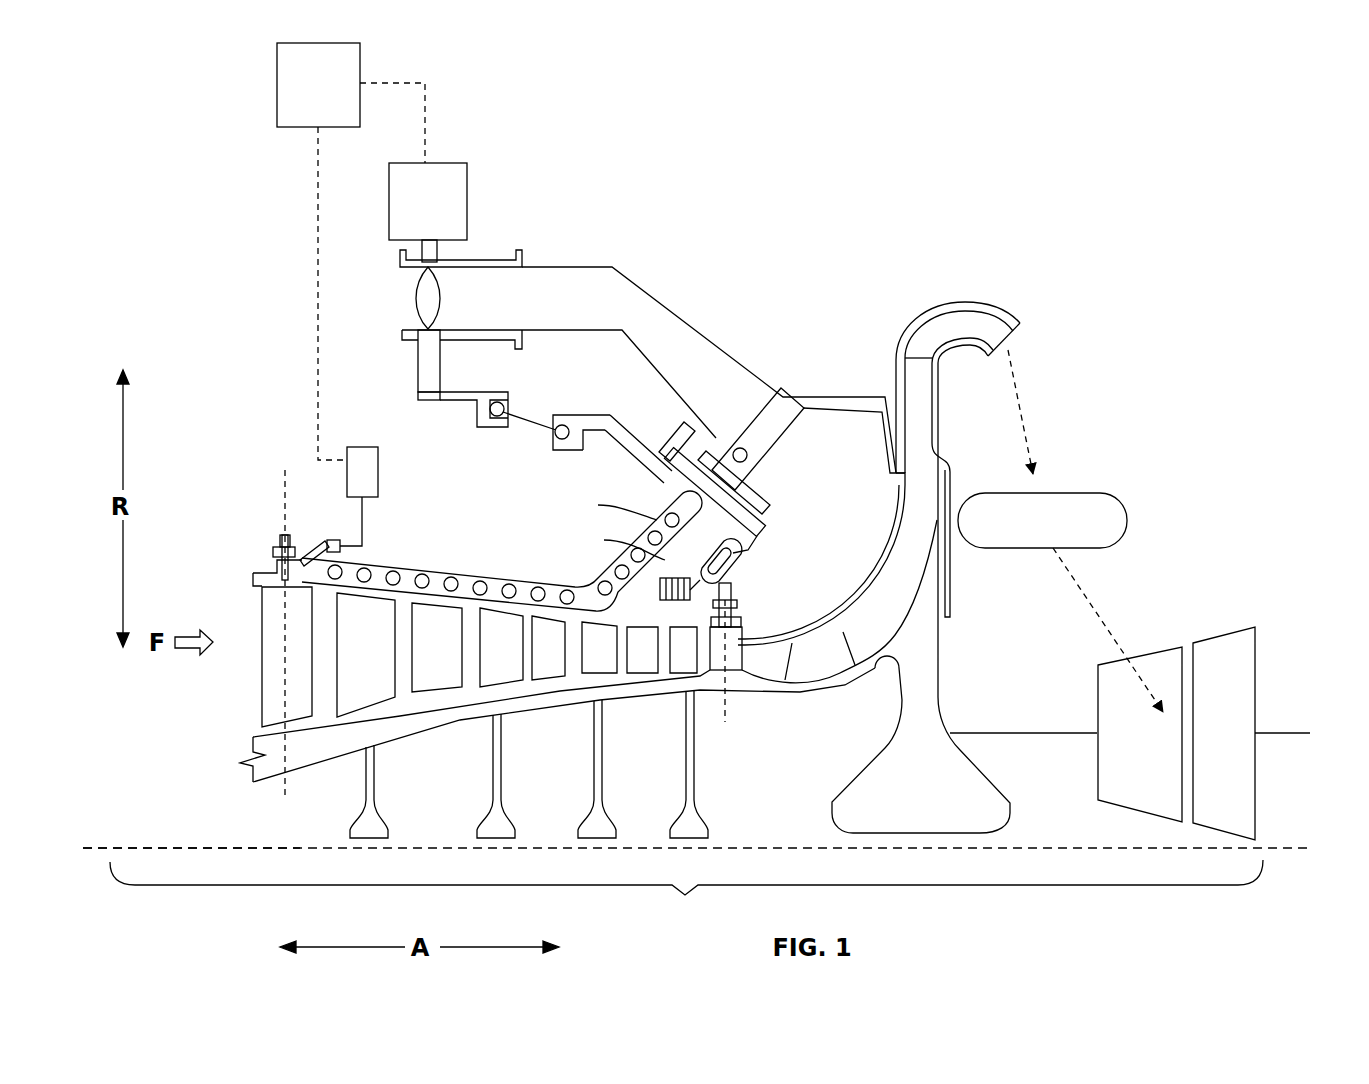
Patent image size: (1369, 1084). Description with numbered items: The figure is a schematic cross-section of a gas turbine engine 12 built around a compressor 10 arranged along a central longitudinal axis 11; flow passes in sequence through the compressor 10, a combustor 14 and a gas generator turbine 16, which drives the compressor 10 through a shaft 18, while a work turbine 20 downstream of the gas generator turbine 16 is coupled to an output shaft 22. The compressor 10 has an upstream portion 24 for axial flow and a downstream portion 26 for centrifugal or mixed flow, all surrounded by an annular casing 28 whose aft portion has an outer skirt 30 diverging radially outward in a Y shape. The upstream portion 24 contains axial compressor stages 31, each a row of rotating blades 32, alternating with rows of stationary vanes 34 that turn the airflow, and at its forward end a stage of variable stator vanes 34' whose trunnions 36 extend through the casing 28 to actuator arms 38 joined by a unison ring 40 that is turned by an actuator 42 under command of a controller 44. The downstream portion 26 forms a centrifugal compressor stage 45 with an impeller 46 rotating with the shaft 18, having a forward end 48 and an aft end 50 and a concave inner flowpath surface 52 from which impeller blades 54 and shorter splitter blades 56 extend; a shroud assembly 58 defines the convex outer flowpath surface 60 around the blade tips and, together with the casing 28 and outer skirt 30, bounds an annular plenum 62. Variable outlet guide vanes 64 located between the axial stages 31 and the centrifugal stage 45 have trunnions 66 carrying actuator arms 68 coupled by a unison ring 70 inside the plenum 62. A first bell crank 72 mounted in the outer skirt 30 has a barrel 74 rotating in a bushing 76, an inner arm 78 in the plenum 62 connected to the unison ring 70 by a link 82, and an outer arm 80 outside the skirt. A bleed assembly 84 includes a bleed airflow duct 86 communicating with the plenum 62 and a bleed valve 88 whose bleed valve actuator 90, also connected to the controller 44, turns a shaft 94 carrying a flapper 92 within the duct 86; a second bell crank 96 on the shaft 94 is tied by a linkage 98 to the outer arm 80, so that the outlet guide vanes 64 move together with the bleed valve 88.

The compressor 10 is at (300, 803).
The central longitudinal axis 11 is at (180, 848).
The gas turbine engine 12 is at (983, 207).
The combustor 14 is at (1026, 537).
The gas generator turbine 16 is at (1126, 751).
The shaft 18 is at (1026, 733).
The work turbine 20 is at (1209, 751).
The output shaft 22 is at (1291, 733).
The upstream portion 24 is at (429, 547).
The downstream portion 26 is at (857, 590).
The annular casing 28 is at (555, 592).
The outer skirt 30 is at (612, 505).
The axial compressor stages 31 is at (375, 583).
The rotating blades 32 is at (697, 664).
The stationary vanes 34 is at (535, 647).
The variable stator vanes 34' is at (287, 657).
The trunnion 36 is at (270, 568).
The actuator arm 38 is at (284, 536).
The unison ring 40 is at (342, 546).
The actuator 42 is at (349, 483).
The controller 44 is at (304, 100).
The centrifugal compressor stage 45 is at (866, 561).
The impeller 46 is at (907, 778).
The forward end 48 is at (768, 690).
The aft end 50 is at (952, 466).
The inner flowpath surface 52 is at (902, 545).
The impeller blades 54 is at (799, 672).
The splitter blades 56 is at (875, 665).
The shroud assembly 58 is at (903, 498).
The outer flowpath surface 60 is at (879, 607).
The annular plenum 62 is at (803, 506).
The variable outlet guide vanes 64 is at (722, 700).
The trunnion 66 is at (742, 623).
The actuator arm 68 is at (740, 596).
The unison ring 70 is at (659, 596).
The first bell crank 72 is at (771, 490).
The barrel 74 is at (736, 465).
The bushing 76 is at (690, 500).
The inner arm 78 is at (619, 543).
The outer arm 80 is at (641, 445).
The link 82 is at (726, 565).
The bleed assembly 84 is at (747, 304).
The bleed airflow duct 86 is at (652, 297).
The bleed valve 88 is at (472, 281).
The bleed valve actuator 90 is at (414, 217).
The flapper 92 is at (416, 304).
The shaft 94 is at (443, 373).
The second bell crank 96 is at (471, 404).
The linkage 98 is at (531, 420).